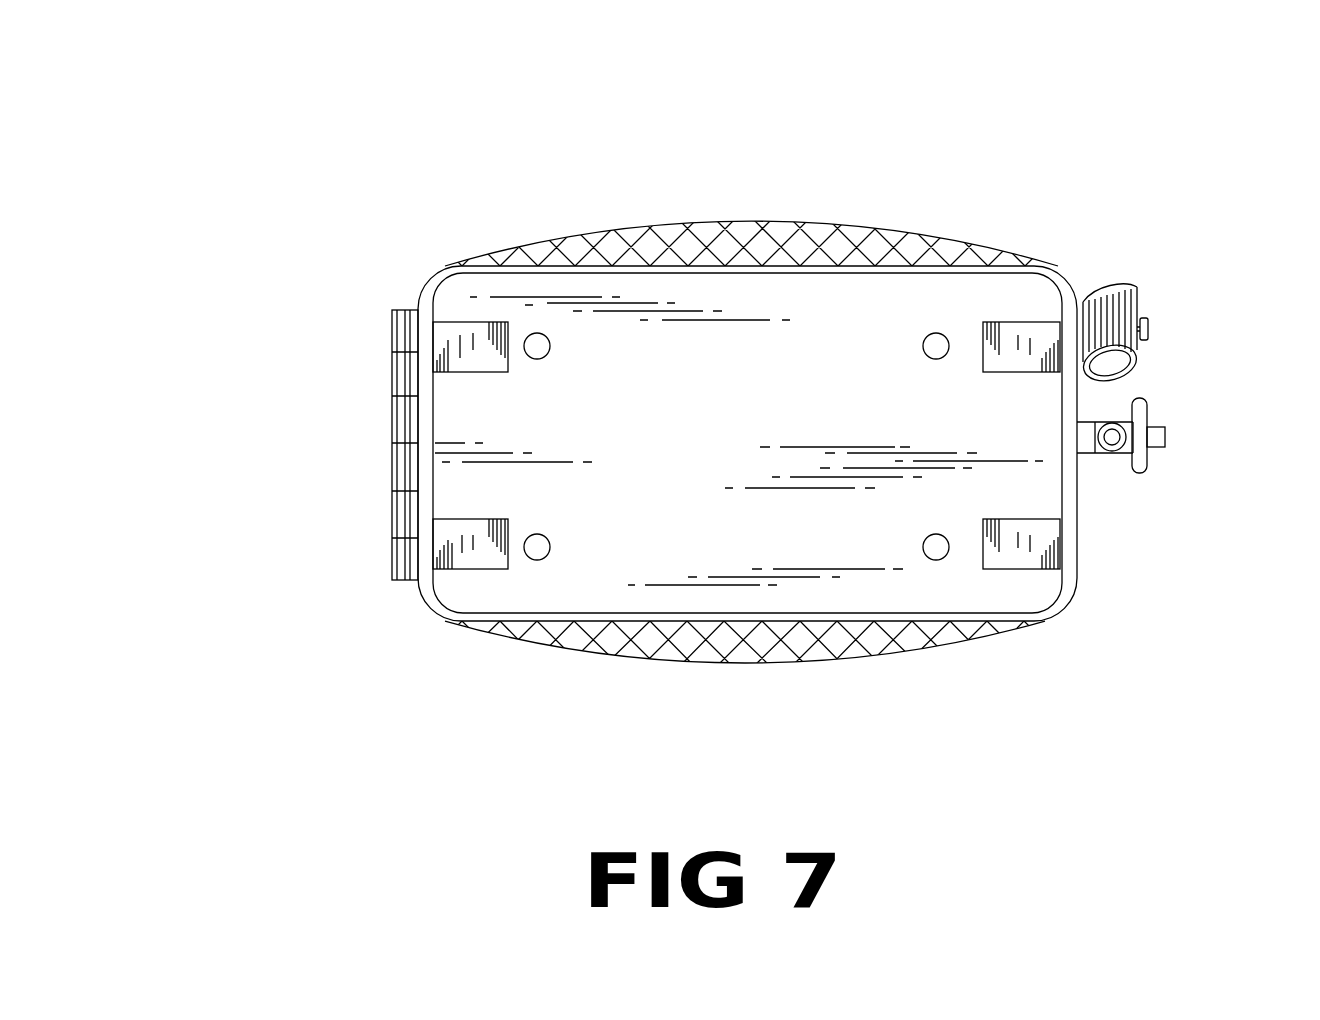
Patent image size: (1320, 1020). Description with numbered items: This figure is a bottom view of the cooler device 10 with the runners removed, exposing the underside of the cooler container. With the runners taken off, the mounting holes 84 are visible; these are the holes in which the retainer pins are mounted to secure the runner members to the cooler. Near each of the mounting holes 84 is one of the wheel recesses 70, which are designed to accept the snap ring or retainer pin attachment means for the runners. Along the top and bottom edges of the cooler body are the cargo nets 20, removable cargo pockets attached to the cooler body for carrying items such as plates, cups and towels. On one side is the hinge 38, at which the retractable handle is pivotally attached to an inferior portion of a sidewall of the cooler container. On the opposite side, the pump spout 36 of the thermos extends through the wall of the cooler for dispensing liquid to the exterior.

The cooler device 10 is at (930, 215).
The cargo nets 20 is at (750, 227).
The pump spout 36 is at (1140, 452).
The hinge 38 is at (403, 483).
The wheel recesses 70 is at (460, 517).
The mounting holes 84 is at (925, 540).